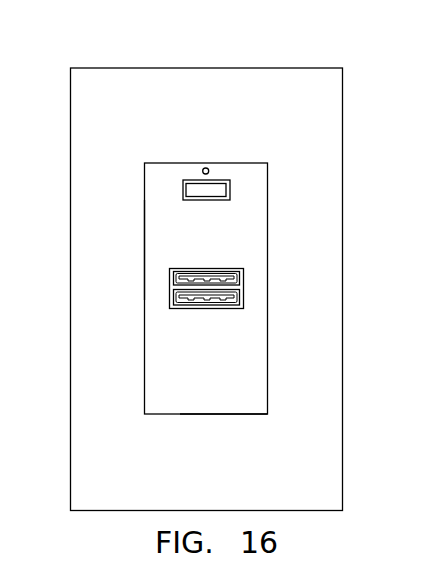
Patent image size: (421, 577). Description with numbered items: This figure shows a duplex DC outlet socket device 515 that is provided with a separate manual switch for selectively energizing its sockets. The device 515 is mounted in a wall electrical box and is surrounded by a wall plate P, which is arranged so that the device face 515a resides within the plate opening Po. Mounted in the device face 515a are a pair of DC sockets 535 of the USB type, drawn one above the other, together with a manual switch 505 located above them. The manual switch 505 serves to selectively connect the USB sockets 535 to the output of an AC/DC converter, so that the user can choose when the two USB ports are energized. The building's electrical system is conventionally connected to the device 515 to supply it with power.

The wall plate P is at (96, 477).
The plate opening Po is at (217, 414).
The device 515 is at (268, 282).
The device face 515a is at (165, 235).
The manual switch 505 is at (200, 200).
The DC sockets 535 is at (170, 277).